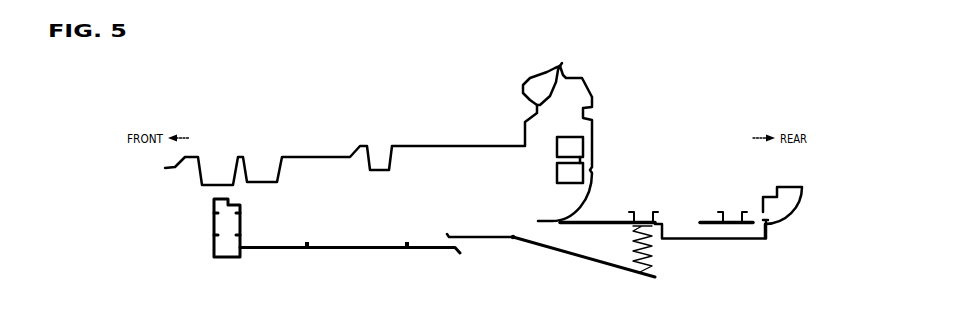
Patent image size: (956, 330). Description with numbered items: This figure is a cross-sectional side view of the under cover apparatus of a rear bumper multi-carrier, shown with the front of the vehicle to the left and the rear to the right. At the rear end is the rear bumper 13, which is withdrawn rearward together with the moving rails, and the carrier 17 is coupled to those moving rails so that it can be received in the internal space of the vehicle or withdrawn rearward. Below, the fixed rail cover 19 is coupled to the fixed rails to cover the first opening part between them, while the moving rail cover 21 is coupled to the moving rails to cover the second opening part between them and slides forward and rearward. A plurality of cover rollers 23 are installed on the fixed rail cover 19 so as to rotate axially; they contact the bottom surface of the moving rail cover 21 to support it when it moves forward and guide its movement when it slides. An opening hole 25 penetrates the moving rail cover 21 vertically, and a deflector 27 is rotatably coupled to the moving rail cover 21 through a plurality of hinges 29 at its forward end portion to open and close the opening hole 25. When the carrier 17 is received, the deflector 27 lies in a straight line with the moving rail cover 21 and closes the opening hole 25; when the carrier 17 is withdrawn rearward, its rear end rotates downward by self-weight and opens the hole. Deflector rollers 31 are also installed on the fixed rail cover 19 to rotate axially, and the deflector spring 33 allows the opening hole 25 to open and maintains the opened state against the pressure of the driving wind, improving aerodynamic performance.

The rear bumper 13 is at (789, 214).
The carrier 17 is at (722, 212).
The fixed rail cover 19 is at (337, 254).
The moving rail cover 21 is at (483, 241).
The cover rollers 23 is at (307, 241).
The opening hole 25 is at (587, 242).
The deflector 27 is at (593, 259).
The hinges 29 is at (513, 241).
The deflector rollers 31 is at (407, 241).
The deflector spring 33 is at (638, 273).